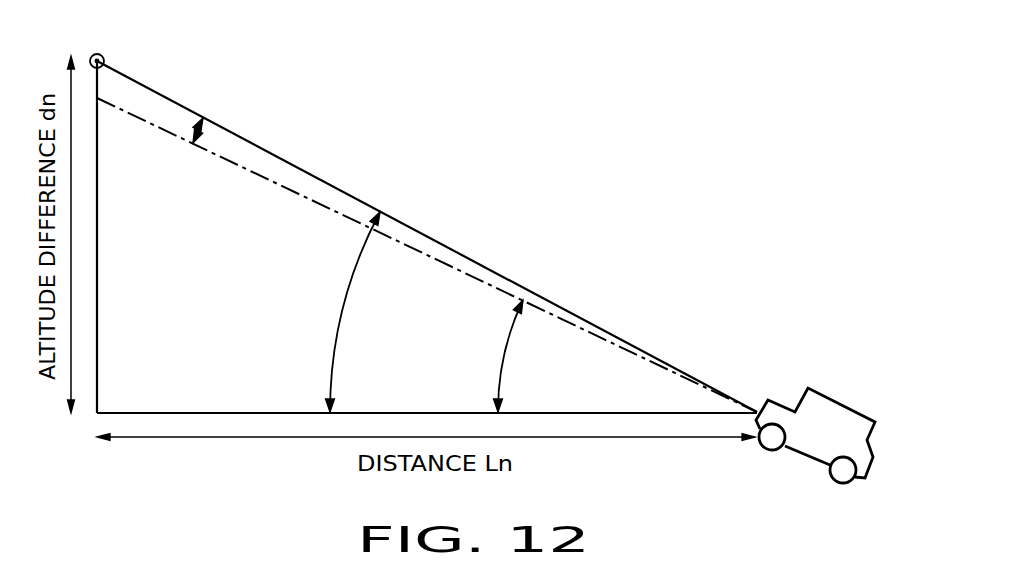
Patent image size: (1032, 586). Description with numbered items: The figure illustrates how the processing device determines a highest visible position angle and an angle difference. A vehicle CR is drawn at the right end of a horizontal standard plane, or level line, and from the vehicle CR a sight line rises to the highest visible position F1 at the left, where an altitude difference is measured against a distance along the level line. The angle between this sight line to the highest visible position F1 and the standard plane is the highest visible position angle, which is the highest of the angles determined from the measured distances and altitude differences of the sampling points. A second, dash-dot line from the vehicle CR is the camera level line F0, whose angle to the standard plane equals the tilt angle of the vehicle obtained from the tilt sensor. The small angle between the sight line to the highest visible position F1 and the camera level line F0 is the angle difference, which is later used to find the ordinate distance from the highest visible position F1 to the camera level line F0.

The highest visible position F1 is at (97, 53).
The camera level line F0 is at (255, 174).
The vehicle CR is at (833, 400).